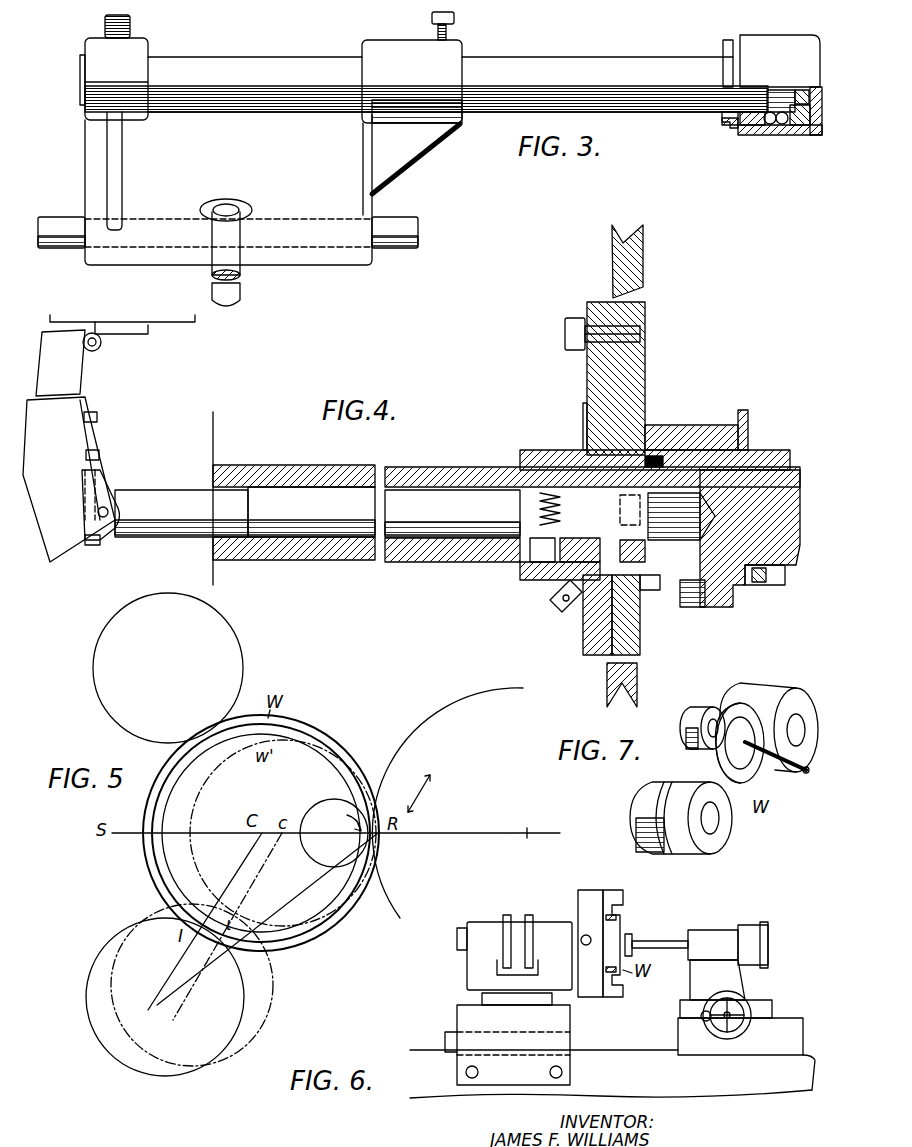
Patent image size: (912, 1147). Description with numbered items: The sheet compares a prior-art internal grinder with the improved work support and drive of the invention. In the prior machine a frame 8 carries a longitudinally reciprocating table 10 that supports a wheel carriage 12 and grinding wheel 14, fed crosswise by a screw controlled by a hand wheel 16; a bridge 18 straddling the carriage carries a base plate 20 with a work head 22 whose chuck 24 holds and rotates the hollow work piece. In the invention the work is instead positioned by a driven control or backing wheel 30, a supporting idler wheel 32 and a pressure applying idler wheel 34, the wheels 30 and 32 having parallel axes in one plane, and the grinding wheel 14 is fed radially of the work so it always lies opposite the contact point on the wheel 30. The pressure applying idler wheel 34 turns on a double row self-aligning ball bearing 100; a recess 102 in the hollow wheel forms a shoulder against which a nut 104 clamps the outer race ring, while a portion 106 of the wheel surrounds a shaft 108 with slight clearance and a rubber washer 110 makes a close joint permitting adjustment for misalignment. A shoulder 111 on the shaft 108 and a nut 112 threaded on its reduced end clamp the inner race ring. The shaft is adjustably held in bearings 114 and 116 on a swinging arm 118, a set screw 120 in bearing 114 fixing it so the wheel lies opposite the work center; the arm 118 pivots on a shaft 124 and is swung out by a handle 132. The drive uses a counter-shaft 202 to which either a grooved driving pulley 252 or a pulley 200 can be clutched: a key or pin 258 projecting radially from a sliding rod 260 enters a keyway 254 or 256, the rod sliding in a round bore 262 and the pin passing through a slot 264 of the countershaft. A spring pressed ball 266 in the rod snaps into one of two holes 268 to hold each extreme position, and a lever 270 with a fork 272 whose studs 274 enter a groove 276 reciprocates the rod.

In FIG. 6, the frame 8 is at (612, 1074).
In FIG. 6, the longitudinally reciprocating table 10 is at (740, 1036).
In FIG. 6, the wheel carriage 12 is at (770, 1005).
In FIG. 5, the grinding wheel 14 is at (334, 833).
In FIG. 7, the grinding wheel 14 is at (757, 770).
In FIG. 6, the grinding wheel 14 is at (640, 936).
In FIG. 6, the hand wheel 16 is at (722, 1000).
In FIG. 6, the bridge 18 is at (507, 1045).
In FIG. 6, the base plate 20 is at (480, 997).
In FIG. 6, the work head 22 is at (467, 964).
In FIG. 6, the chuck 24 is at (622, 896).
In FIG. 5, the driven control or backing wheel 30 is at (447, 803).
In FIG. 7, the driven control or backing wheel 30 is at (769, 727).
In FIG. 5, the supporting idler wheel 32 is at (190, 990).
In FIG. 7, the supporting idler wheel 32 is at (705, 840).
In FIG. 3, the pressure applying idler wheel 34 is at (771, 61).
In FIG. 5, the pressure applying idler wheel 34 is at (168, 668).
In FIG. 7, the pressure applying idler wheel 34 is at (698, 718).
In FIG. 3, the double row self-aligning ball bearing 100 is at (784, 135).
In FIG. 3, the recess 102 is at (752, 135).
In FIG. 3, the nut 104 is at (812, 136).
In FIG. 3, the portion of the wheel 106 is at (720, 117).
In FIG. 3, the shaft 108 is at (426, 90).
In FIG. 3, the rubber washer 110 is at (720, 126).
In FIG. 3, the shoulder 111 is at (777, 90).
In FIG. 3, the nut 112 is at (820, 98).
In FIG. 3, the bearing 114 is at (412, 81).
In FIG. 3, the bearing 116 is at (114, 67).
In FIG. 3, the swinging arm or bracket 118 is at (272, 188).
In FIG. 3, the set screw 120 is at (430, 18).
In FIG. 3, the shaft 124 is at (418, 230).
In FIG. 3, the handle 132 is at (240, 295).
In FIG. 4, the pulley 200 is at (742, 607).
In FIG. 4, the counter-shaft 202 is at (800, 545).
In FIG. 4, the grooved driving pulley 252 is at (640, 653).
In FIG. 4, the keyway 254 is at (568, 613).
In FIG. 4, the keyway 256 is at (690, 605).
In FIG. 4, the key or pin 258 is at (642, 552).
In FIG. 4, the sliding rod 260 is at (452, 513).
In FIG. 4, the round bore 262 is at (333, 561).
In FIG. 4, the slot 264 is at (683, 556).
In FIG. 4, the spring pressed ball 266 is at (562, 520).
In FIG. 4, the holes 268 is at (548, 580).
In FIG. 4, the lever 270 is at (69, 446).
In FIG. 4, the fork 272 is at (72, 508).
In FIG. 4, the studs 274 is at (103, 518).
In FIG. 4, the groove 276 is at (110, 538).